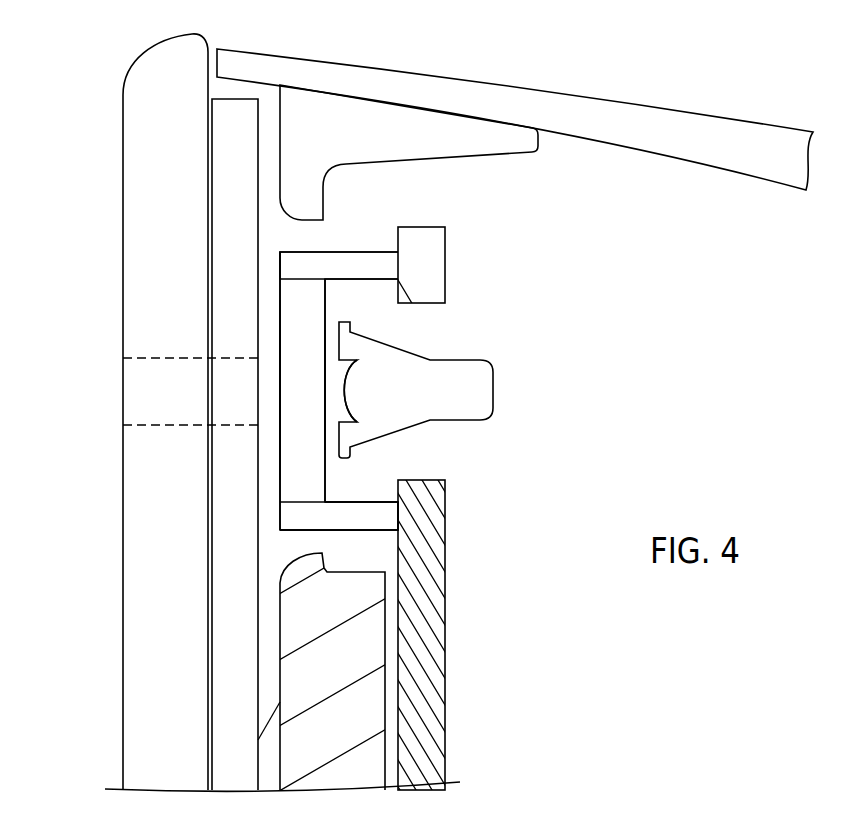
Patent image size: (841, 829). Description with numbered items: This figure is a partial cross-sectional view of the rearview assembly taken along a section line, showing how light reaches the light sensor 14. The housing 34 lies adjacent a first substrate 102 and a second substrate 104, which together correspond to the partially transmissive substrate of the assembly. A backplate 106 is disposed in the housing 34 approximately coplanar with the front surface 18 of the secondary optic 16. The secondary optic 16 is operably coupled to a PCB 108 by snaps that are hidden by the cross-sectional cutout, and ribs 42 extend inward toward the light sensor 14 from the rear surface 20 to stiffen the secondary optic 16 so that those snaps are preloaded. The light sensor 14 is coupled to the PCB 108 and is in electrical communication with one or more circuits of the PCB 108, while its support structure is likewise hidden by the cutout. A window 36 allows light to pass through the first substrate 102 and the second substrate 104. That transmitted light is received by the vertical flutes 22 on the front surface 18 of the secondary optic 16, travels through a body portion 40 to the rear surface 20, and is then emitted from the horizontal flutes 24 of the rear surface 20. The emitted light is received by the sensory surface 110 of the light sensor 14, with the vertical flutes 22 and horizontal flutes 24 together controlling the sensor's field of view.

The light sensor 14 is at (483, 370).
The secondary optic 16 is at (308, 278).
The first surface 18 is at (280, 387).
The second surface 20 is at (327, 483).
The vertical flutes 22 is at (276, 315).
The horizontal flutes 24 is at (331, 311).
The housing 34 is at (518, 92).
The window 36 is at (132, 385).
The body portion 40 is at (303, 390).
The ribs 42 is at (367, 265).
The first substrate 102 is at (135, 186).
The second substrate 104 is at (225, 317).
The backplate 106 is at (378, 113).
The PCB 108 is at (446, 648).
The sensory surface 110 is at (338, 412).